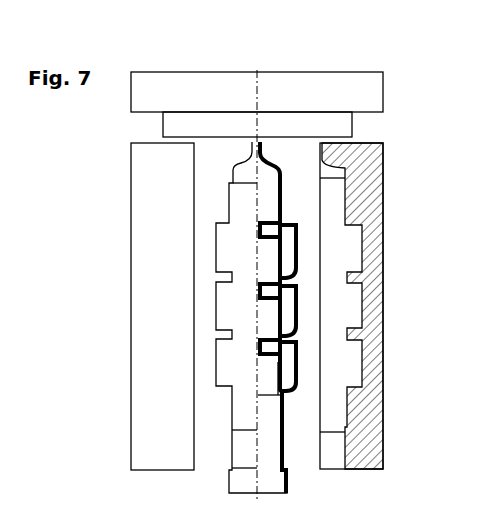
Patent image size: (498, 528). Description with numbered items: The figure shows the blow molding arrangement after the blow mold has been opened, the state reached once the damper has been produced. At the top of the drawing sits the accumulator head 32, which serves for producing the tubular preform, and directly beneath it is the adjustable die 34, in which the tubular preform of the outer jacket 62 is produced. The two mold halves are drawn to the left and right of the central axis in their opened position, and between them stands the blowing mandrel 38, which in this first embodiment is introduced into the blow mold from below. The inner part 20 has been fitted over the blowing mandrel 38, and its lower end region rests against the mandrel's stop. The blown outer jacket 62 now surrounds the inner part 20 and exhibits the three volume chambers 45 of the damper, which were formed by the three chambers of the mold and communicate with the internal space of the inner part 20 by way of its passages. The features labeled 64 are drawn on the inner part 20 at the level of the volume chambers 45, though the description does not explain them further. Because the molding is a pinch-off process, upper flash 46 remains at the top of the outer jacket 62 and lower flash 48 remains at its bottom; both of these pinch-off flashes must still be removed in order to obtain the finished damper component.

The accumulator head 32 is at (322, 90).
The die 34 is at (173, 124).
The blowing mandrel 38 is at (147, 237).
The upper flash 46 is at (284, 167).
The outer jacket 62 is at (298, 247).
The ribs 64 is at (262, 222).
The volume chambers 45 is at (285, 308).
The inner part 20 is at (278, 368).
The lower flash 48 is at (285, 450).